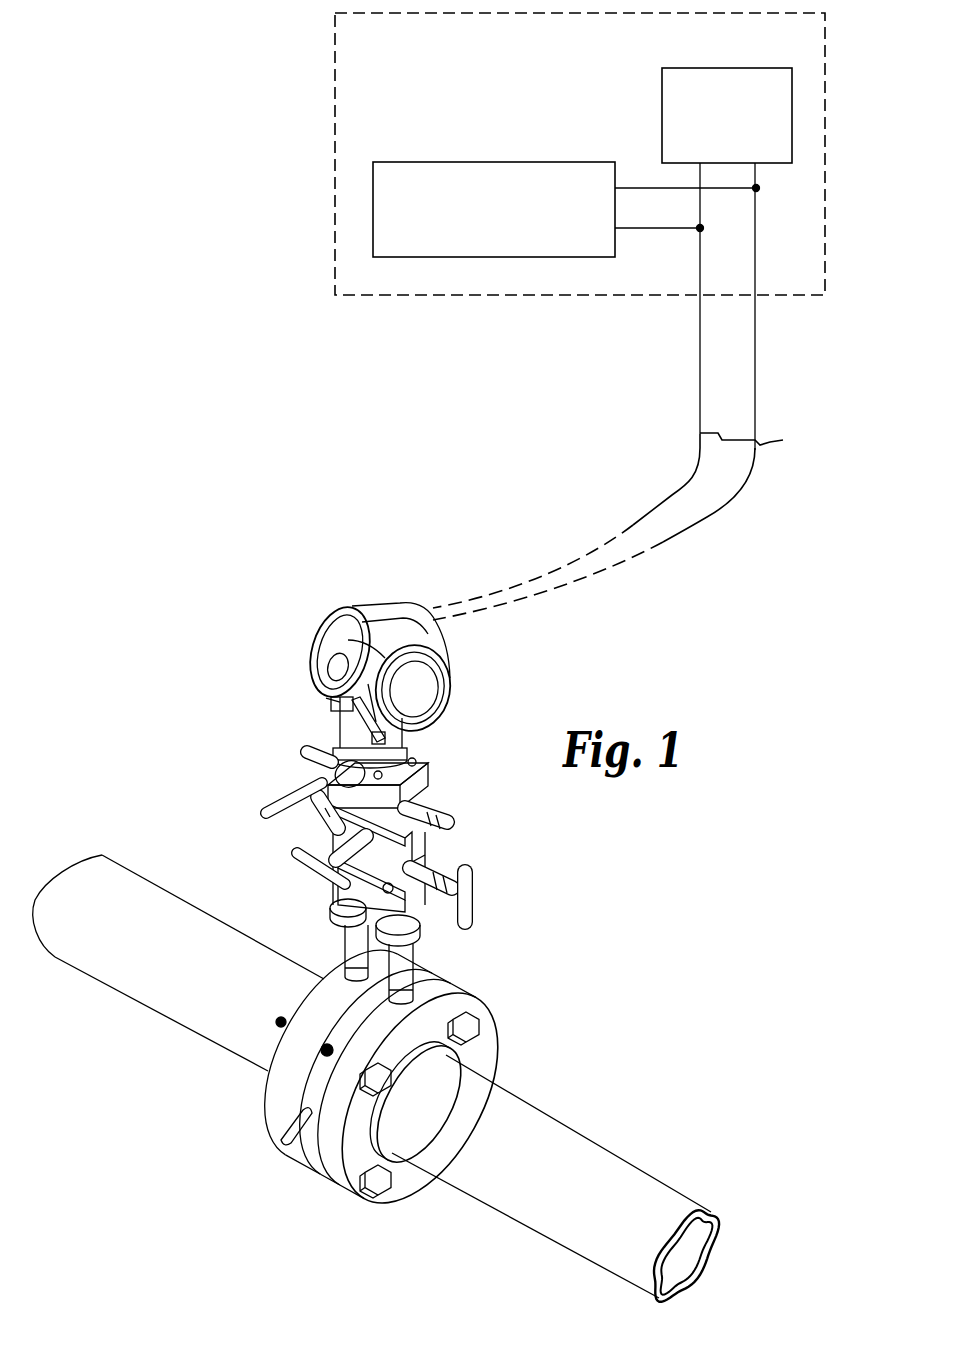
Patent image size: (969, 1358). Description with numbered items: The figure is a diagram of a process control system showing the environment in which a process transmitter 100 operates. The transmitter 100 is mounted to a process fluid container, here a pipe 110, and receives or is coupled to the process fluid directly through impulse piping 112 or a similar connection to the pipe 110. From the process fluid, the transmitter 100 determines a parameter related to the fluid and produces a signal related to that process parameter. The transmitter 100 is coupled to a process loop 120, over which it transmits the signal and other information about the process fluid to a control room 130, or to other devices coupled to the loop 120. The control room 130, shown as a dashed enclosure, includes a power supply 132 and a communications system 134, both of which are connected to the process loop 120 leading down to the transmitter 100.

The process transmitter 100 is at (340, 608).
The pipe 110 is at (547, 1112).
The impulse piping 112 is at (428, 963).
The process loop 120 is at (629, 391).
The control room 130 is at (613, 297).
The power supply 132 is at (662, 100).
The communications system 134 is at (407, 162).